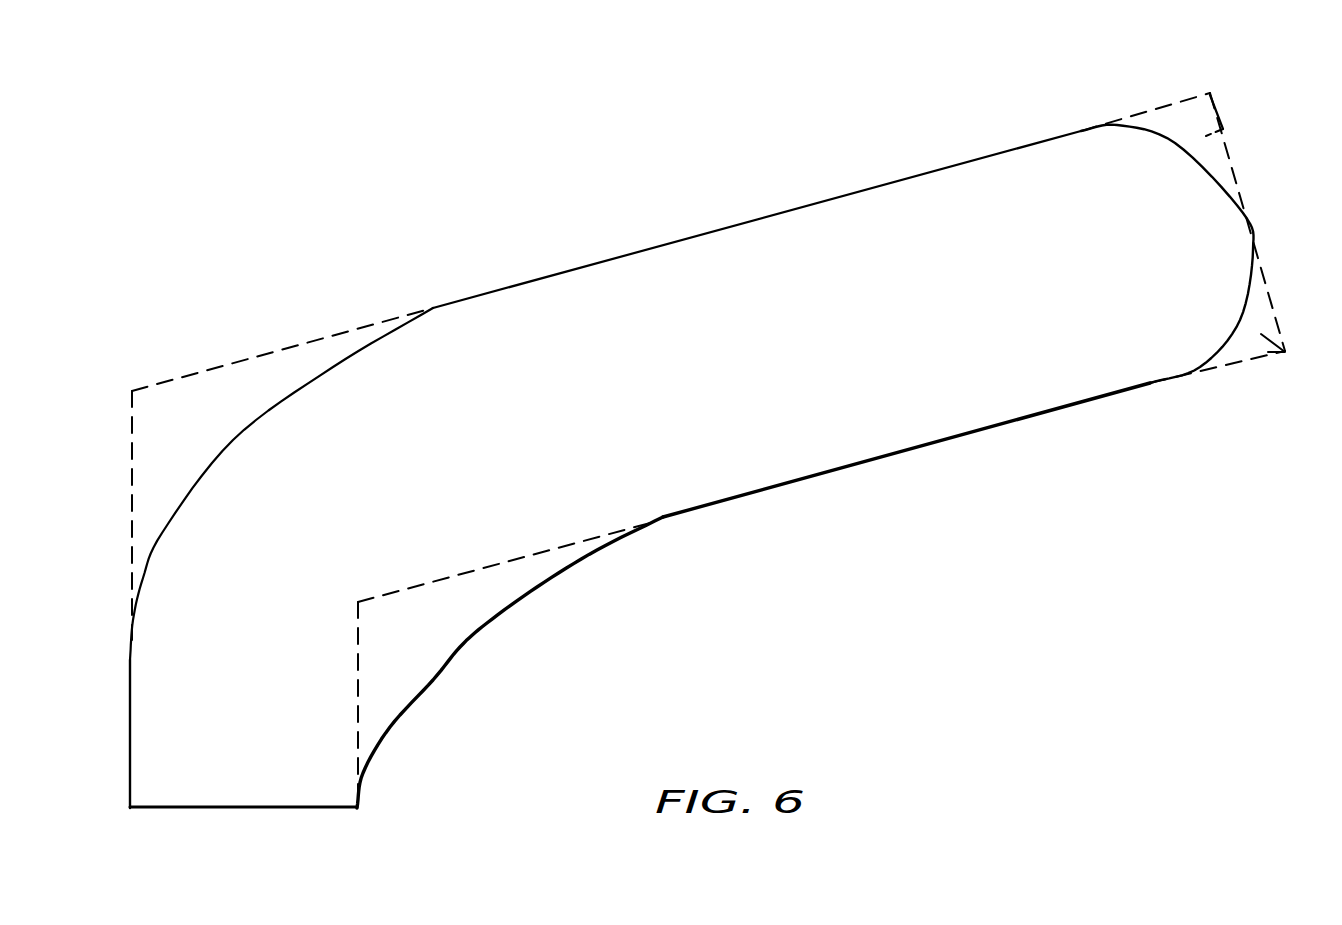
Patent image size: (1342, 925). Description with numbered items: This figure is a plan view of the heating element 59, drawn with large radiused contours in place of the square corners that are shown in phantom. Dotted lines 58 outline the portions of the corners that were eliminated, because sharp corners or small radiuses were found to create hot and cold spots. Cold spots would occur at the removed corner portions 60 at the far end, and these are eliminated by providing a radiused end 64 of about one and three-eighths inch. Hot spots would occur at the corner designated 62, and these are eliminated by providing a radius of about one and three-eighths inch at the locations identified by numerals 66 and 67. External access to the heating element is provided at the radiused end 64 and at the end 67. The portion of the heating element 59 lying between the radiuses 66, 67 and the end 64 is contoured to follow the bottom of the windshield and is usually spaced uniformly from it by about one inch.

The dotted lines 58 is at (1196, 92).
The heating element 59 is at (797, 512).
The removed corner portions 60 is at (1230, 127).
The corner 62 is at (167, 465).
The radiused end 64 is at (1228, 222).
The radius location 66 is at (487, 623).
The radius location 67 is at (233, 440).